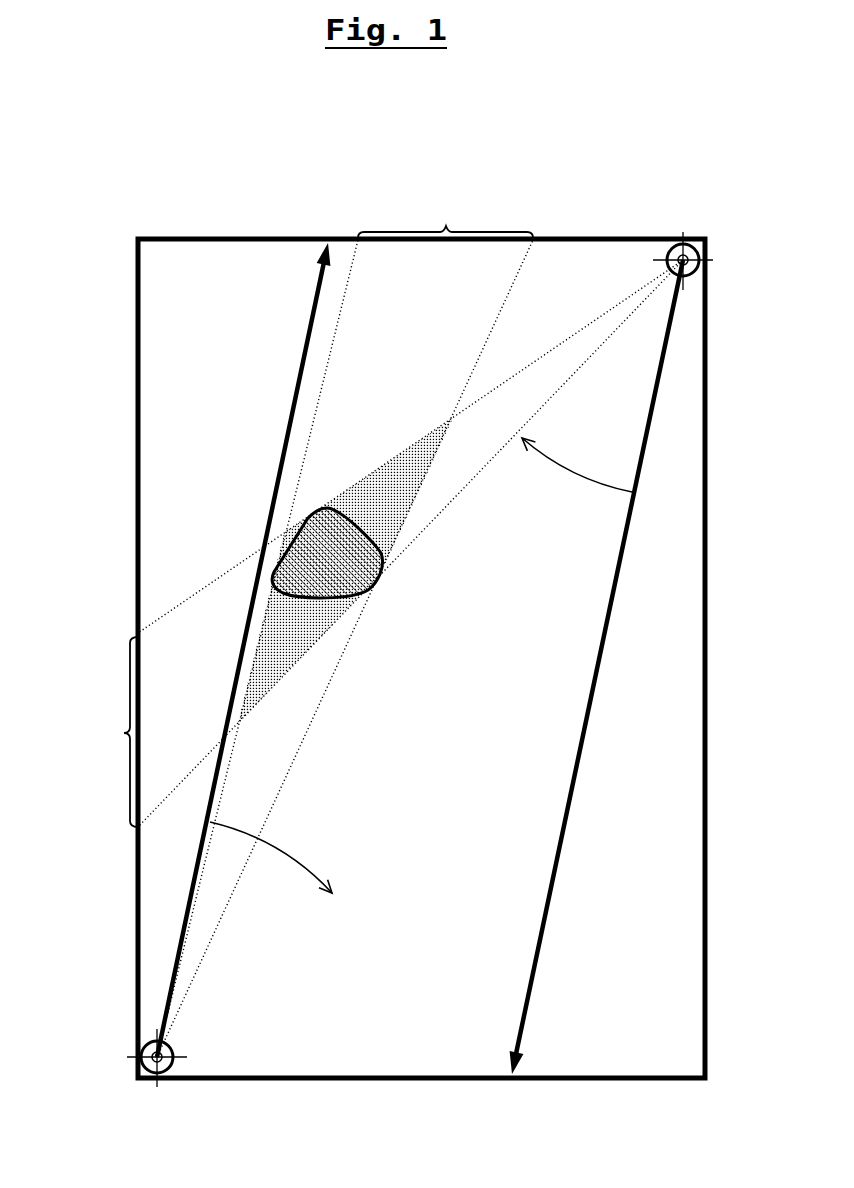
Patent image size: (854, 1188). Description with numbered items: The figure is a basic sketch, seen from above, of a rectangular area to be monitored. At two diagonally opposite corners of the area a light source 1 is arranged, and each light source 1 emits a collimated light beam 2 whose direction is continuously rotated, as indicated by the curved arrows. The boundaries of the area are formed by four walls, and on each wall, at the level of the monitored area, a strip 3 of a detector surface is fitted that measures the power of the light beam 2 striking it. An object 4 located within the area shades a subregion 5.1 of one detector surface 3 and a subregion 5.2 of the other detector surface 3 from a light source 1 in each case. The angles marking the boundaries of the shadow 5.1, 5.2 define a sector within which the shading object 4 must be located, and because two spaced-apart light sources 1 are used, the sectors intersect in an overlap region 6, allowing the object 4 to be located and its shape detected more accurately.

The light source 1 is at (676, 240).
The light beam 2 is at (615, 575).
The strip of detector surface 3 is at (237, 241).
The object 4 is at (308, 567).
The subregion 5.1 is at (446, 226).
The subregion 5.2 is at (124, 733).
The overlap region 6 is at (283, 635).